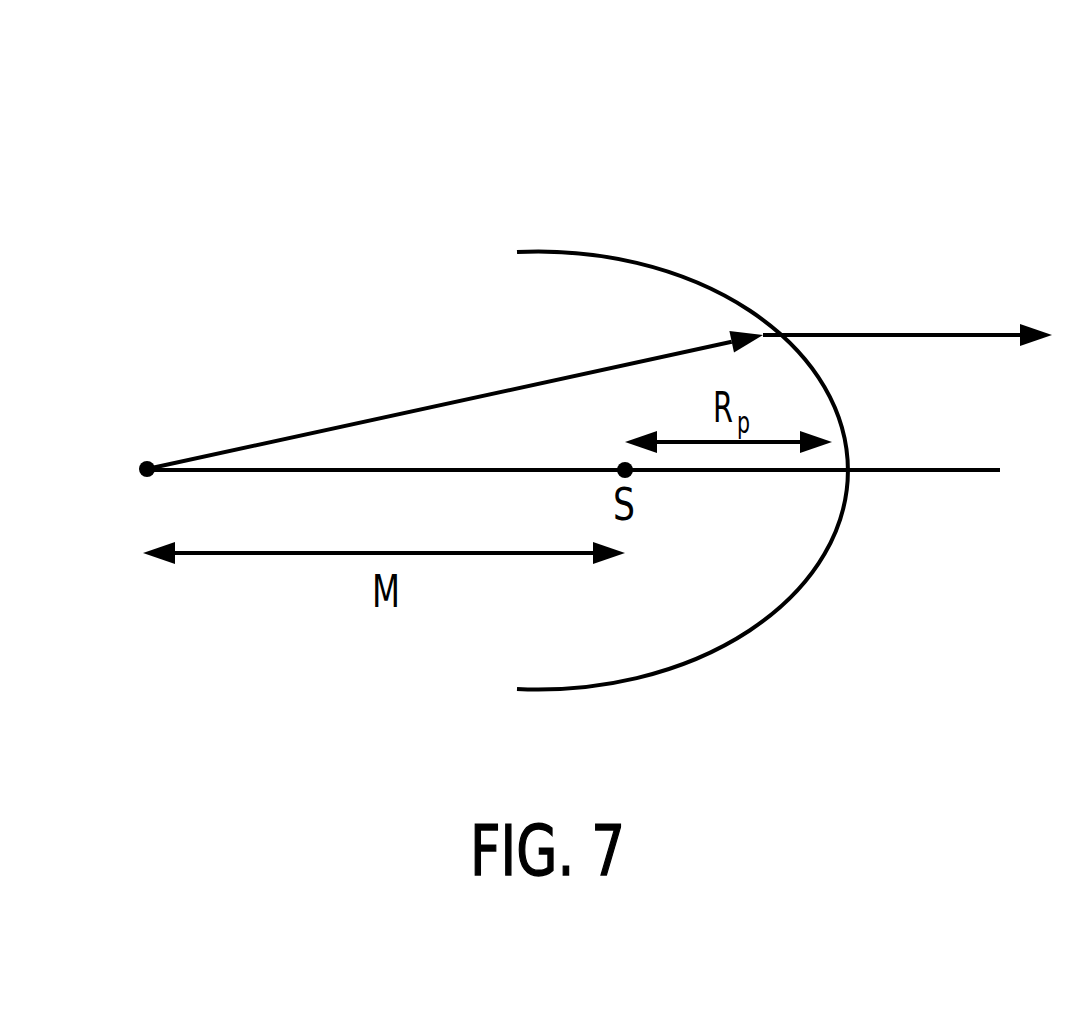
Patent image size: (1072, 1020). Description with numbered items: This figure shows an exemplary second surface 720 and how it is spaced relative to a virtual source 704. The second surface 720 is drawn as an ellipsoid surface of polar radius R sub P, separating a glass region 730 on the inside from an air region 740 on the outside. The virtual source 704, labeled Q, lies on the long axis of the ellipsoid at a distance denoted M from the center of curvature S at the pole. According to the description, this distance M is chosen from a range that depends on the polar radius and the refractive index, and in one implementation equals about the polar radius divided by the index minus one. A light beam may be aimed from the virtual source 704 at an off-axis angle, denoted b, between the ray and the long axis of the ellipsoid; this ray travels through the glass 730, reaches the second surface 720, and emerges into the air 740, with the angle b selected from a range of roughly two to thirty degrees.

The virtual source 704 is at (130, 408).
The second surface 720 is at (660, 273).
The glass 730 is at (420, 367).
The air 740 is at (1013, 189).